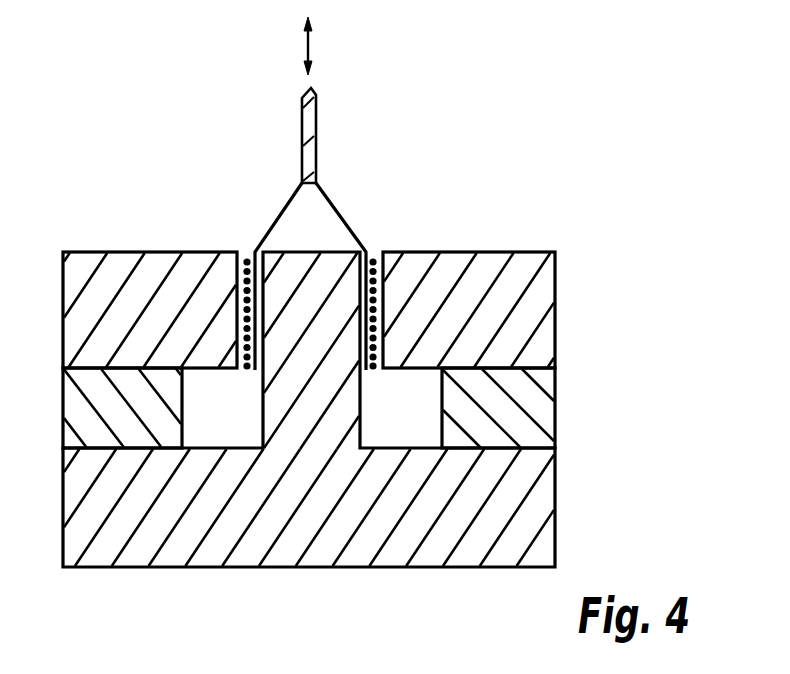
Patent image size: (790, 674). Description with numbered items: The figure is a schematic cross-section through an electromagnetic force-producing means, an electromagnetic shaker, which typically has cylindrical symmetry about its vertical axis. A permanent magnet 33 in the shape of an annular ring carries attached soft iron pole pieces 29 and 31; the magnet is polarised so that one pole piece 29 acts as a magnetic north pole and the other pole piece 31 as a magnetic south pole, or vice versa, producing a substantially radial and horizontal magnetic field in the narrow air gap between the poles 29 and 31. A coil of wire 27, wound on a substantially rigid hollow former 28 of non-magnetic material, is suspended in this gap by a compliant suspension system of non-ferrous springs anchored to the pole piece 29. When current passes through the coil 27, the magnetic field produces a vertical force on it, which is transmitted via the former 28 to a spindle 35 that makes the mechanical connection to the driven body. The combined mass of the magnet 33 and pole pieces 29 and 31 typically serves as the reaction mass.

The coil of wire 27 is at (373, 253).
The hollow former 28 is at (278, 213).
The pole piece 29 is at (160, 330).
The pole piece 31 is at (323, 332).
The permanent magnet 33 is at (140, 425).
The spindle 35 is at (317, 122).